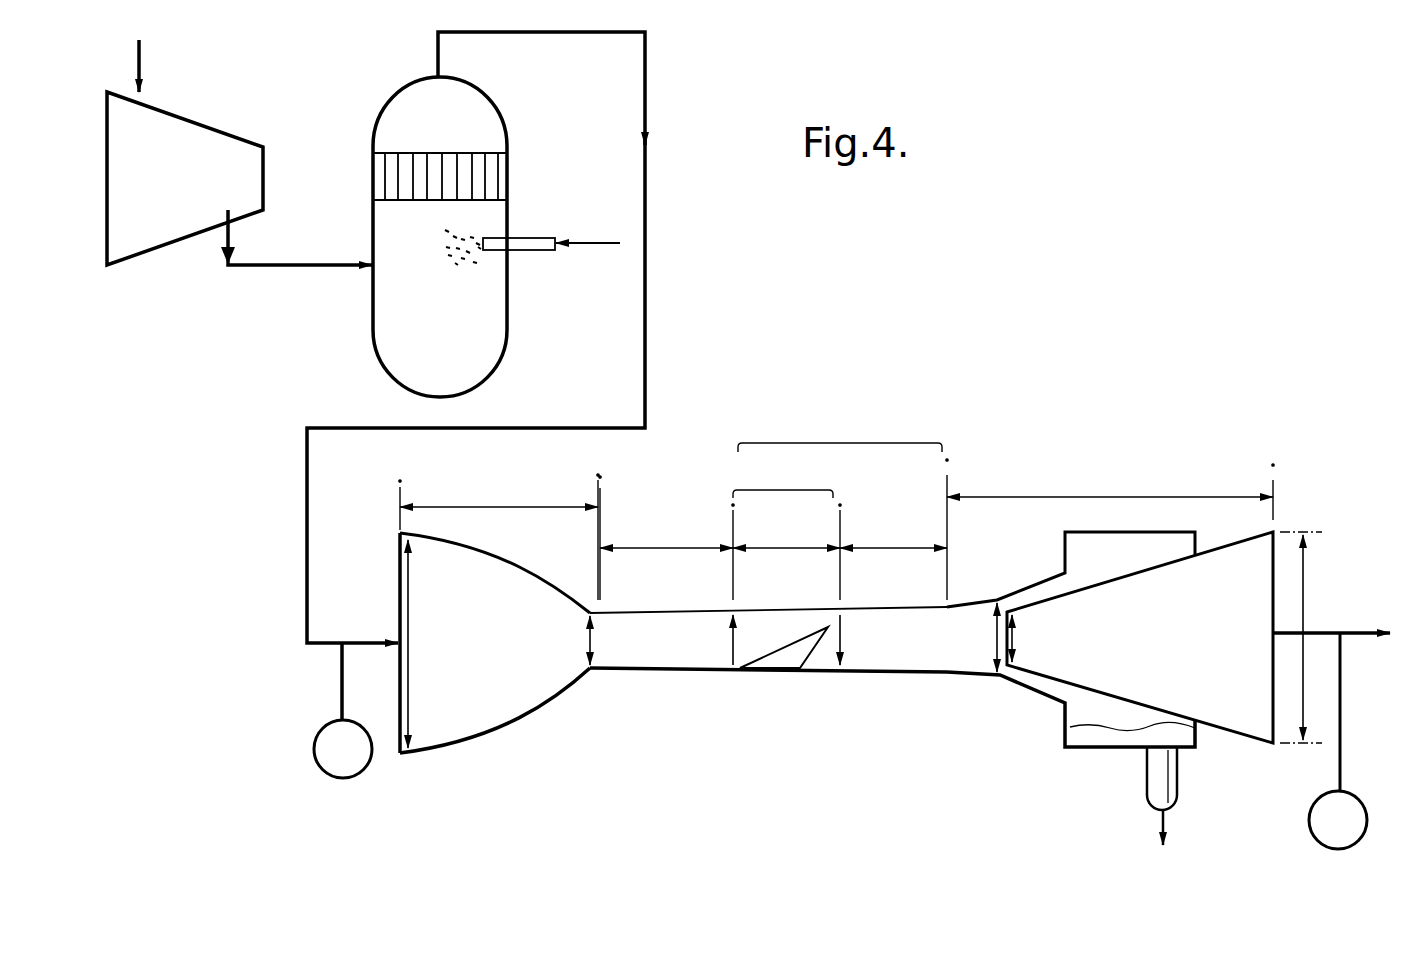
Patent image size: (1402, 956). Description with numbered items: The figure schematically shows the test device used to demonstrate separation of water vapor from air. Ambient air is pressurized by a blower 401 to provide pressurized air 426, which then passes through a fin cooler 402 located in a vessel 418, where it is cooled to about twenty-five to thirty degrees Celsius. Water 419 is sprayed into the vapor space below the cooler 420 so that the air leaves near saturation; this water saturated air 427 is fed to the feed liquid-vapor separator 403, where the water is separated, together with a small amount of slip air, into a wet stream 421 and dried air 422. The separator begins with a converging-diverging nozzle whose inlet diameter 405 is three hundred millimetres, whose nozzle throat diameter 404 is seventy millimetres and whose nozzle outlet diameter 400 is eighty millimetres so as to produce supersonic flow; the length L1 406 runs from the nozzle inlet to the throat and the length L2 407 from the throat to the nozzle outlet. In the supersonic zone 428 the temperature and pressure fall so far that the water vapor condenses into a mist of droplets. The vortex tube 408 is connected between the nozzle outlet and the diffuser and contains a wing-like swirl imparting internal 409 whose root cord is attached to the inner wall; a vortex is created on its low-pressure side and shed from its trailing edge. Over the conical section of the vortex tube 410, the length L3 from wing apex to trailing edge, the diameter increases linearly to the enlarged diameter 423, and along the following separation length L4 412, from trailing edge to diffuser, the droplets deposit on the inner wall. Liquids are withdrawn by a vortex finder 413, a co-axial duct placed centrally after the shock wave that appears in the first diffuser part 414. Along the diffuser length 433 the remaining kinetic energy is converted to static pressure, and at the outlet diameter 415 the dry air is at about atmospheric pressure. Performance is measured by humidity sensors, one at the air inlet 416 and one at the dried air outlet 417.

The nozzle outlet diameter 400 is at (733, 640).
The blower 401 is at (185, 200).
The fin cooler 402 is at (405, 165).
The feed liquid-vapor separator 403 is at (643, 669).
The nozzle throat diameter 404 is at (588, 633).
The inlet diameter 405 is at (408, 620).
The length L1 406 is at (515, 510).
The length L2 407 is at (663, 552).
The vortex tube 408 is at (840, 430).
The wing-like swirl imparting internal 409 is at (790, 657).
The conical section of the vortex tube (length L3) 410 is at (795, 552).
The length L4 412 is at (898, 552).
The vortex finder 413 is at (1058, 685).
The first diffuser part 414 is at (993, 622).
The outlet diameter of the diffuser 415 is at (1305, 575).
The air inlet humidity sensor 416 is at (313, 749).
The dried air outlet humidity sensor 417 is at (1308, 822).
The vessel 418 is at (370, 356).
The water 419 is at (466, 267).
The vapor space below the cooler 420 is at (441, 276).
The wet stream 421 is at (1150, 782).
The dried air 422 is at (1345, 630).
The vortex tube enlarged diameter 423 is at (862, 640).
The pressurized air 426 is at (300, 268).
The water saturated air 427 is at (553, 35).
The supersonic zone 428 is at (648, 638).
The diffuser length 433 is at (1062, 496).